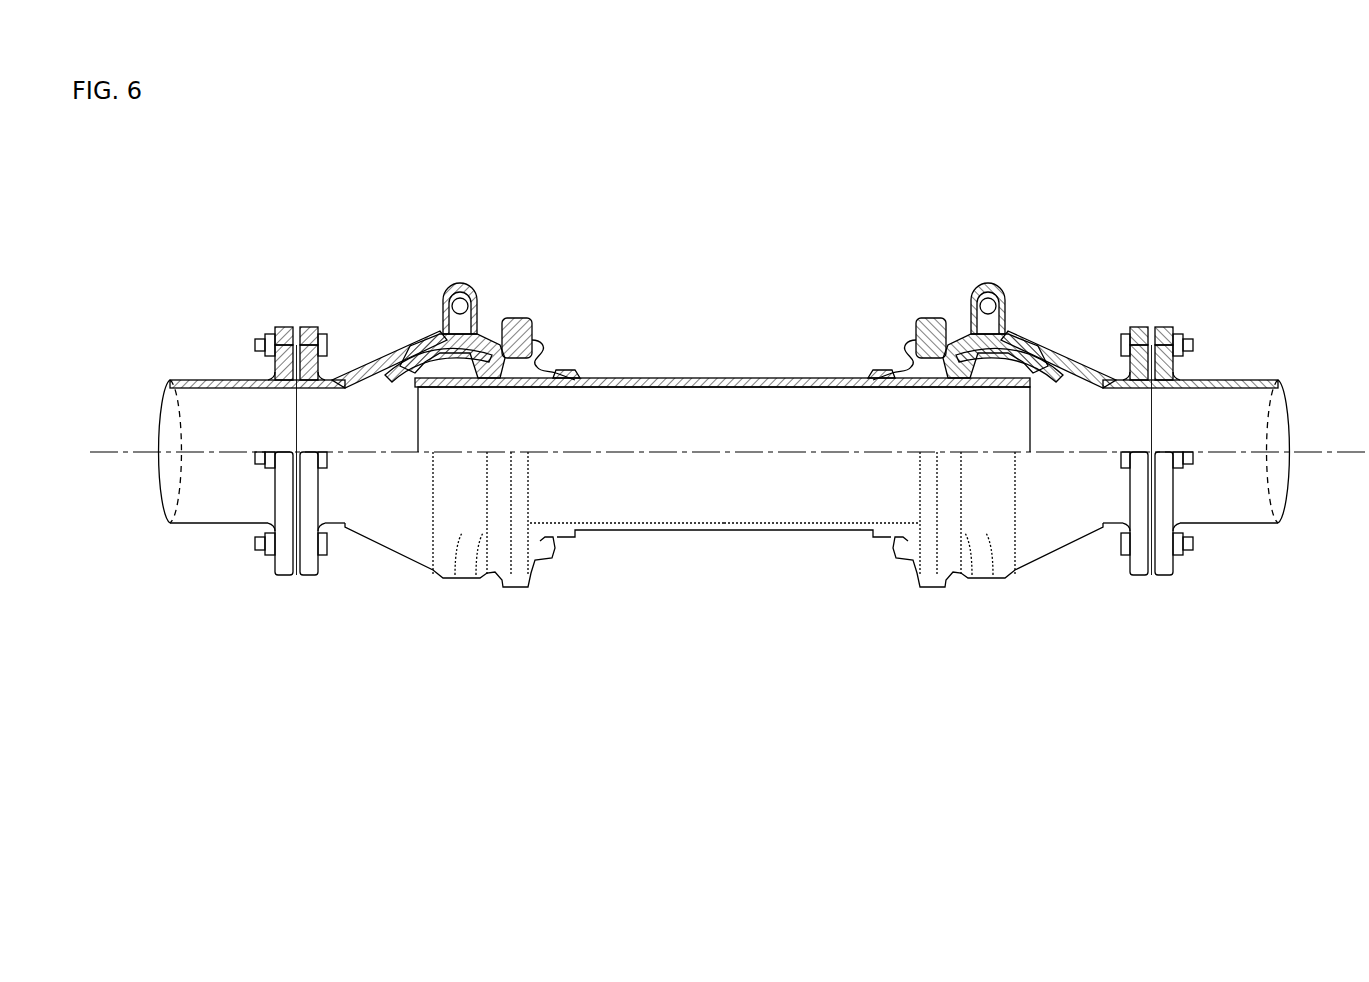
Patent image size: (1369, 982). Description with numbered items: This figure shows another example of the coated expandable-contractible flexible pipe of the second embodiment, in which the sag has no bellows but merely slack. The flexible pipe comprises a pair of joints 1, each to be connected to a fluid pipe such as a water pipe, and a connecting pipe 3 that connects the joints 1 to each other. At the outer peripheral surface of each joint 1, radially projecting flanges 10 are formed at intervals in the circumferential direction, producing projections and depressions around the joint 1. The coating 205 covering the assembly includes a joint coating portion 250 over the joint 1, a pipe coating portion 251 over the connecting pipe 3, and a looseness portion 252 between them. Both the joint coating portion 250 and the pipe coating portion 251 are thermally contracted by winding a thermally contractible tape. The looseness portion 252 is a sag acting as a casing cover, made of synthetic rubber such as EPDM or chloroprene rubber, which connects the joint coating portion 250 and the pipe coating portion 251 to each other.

The joint 1 is at (404, 592).
The connecting pipe 3 is at (745, 500).
The flange 10 is at (467, 567).
The coating 205 is at (724, 438).
The joint coating portion 250 is at (487, 345).
The pipe coating portion 251 is at (547, 207).
The looseness portion 252 is at (553, 348).